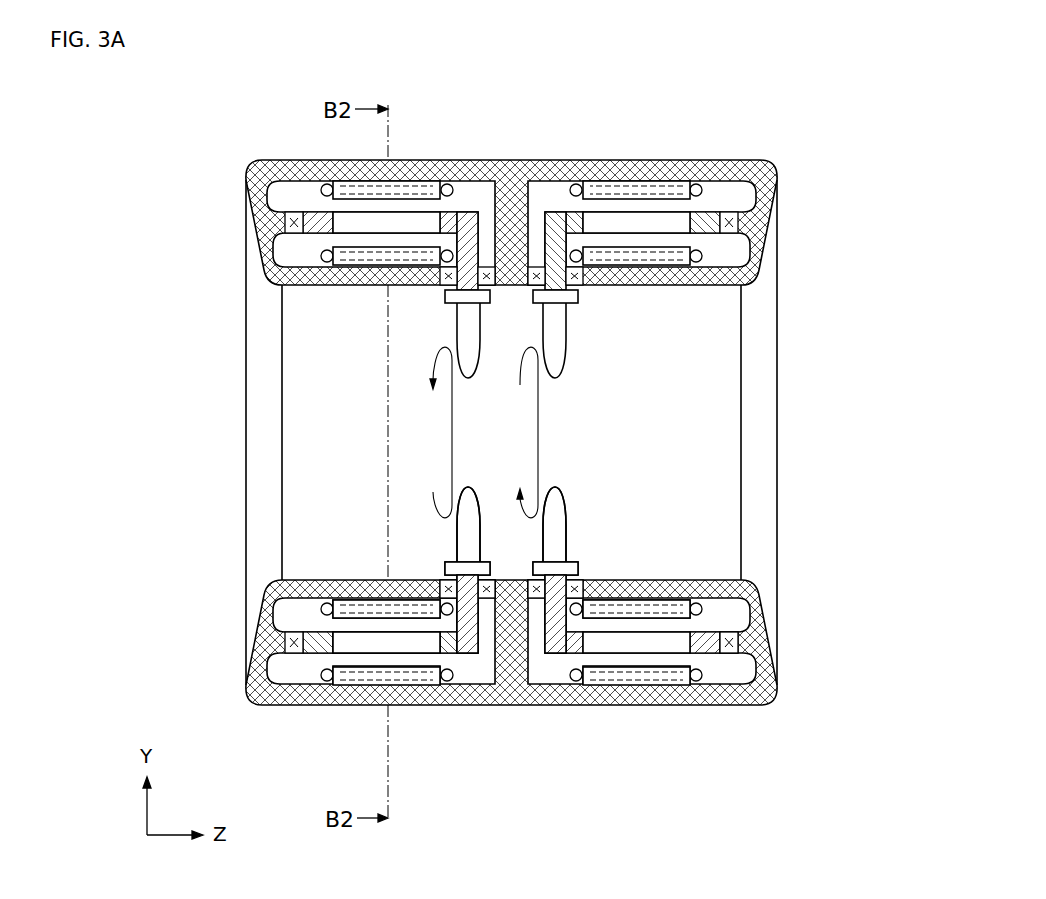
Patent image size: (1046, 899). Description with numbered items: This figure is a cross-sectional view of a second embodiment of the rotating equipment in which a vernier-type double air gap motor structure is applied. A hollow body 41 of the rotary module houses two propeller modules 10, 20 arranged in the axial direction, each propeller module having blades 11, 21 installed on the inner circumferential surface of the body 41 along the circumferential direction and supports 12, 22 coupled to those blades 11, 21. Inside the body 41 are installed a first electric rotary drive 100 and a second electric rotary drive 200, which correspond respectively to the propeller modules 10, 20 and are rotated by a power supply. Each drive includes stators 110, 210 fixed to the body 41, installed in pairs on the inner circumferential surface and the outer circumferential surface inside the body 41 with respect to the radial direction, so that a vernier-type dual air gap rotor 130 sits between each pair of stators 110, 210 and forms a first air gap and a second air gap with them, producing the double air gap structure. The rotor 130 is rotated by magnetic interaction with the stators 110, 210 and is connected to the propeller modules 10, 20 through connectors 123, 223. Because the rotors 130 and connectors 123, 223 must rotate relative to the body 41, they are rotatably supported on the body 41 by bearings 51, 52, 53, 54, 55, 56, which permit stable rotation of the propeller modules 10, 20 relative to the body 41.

The propeller module 10 is at (200, 550).
The blade 11 is at (465, 568).
The support 12 is at (458, 558).
The propeller module 20 is at (823, 550).
The blade 21 is at (558, 568).
The support 22 is at (565, 558).
The body 41 is at (772, 162).
The bearing 51 is at (433, 578).
The bearing 52 is at (486, 600).
The bearing 53 is at (545, 590).
The bearing 54 is at (588, 578).
The bearing 55 is at (250, 690).
The bearing 56 is at (738, 640).
The first electric rotary drive 100 is at (422, 313).
The stator 110 is at (316, 675).
The connector 123 is at (467, 617).
The vernier-type dual air gap rotor 130 is at (365, 662).
The second electric rotary drive 200 is at (601, 313).
The stator 210 is at (623, 695).
The connector 223 is at (557, 643).